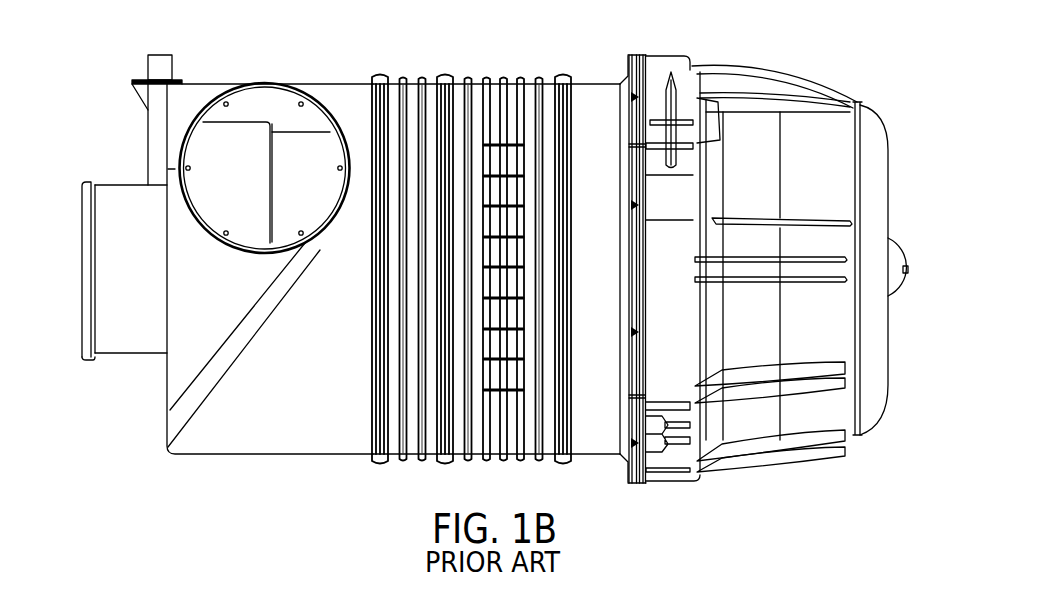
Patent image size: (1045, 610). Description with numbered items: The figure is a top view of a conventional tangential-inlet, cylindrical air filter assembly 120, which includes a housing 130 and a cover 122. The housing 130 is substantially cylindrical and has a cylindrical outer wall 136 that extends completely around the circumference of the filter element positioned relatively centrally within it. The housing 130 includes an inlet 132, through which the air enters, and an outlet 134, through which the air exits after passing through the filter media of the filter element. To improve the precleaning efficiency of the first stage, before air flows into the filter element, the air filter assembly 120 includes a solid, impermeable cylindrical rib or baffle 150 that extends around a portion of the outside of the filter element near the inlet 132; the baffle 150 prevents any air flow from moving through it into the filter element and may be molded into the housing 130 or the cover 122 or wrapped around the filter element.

The air filter assembly 120 is at (768, 52).
The cover 122 is at (890, 116).
The housing 130 is at (246, 458).
The inlet 132 is at (319, 101).
The outlet 134 is at (86, 333).
The cylindrical outer wall 136 is at (292, 438).
The baffle 150 is at (241, 112).